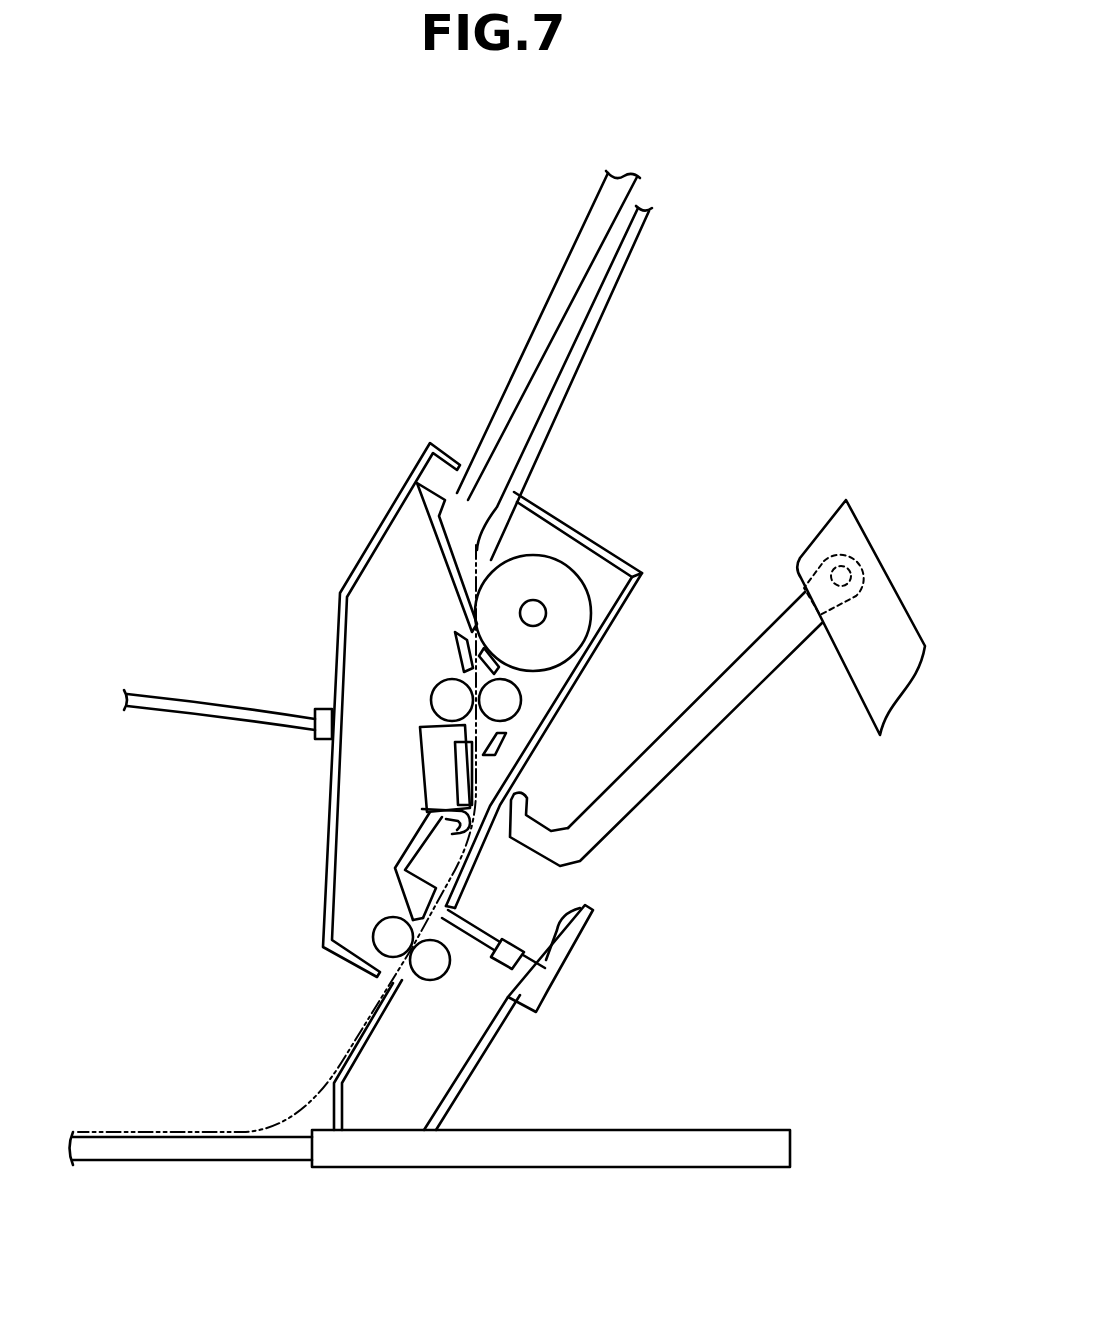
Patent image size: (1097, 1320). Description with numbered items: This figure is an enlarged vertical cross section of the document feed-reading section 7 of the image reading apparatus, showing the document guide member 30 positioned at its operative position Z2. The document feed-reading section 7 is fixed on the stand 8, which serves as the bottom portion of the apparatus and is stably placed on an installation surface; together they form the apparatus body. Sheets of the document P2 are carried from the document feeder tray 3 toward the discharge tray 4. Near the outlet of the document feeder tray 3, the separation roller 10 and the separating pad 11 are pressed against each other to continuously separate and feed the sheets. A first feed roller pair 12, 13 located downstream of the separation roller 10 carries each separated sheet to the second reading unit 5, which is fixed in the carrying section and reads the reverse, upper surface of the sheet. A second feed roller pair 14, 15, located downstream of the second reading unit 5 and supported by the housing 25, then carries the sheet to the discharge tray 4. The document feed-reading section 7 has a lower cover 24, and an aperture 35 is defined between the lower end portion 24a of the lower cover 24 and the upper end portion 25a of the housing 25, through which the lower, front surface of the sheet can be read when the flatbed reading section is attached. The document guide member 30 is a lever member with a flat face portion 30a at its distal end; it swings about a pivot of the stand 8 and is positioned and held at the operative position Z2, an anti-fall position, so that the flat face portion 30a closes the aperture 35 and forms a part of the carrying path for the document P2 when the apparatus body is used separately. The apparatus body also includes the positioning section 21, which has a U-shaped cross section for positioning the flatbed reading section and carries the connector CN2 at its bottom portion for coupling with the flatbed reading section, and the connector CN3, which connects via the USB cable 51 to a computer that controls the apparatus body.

The document feeder tray 3 is at (592, 333).
The discharge tray 4 is at (163, 1150).
The second reading unit 5 is at (443, 760).
The document feed-reading section 7 is at (330, 673).
The stand 8 is at (735, 1142).
The separation roller 10 is at (568, 612).
The separating pad 11 is at (458, 603).
The first feed roller pair 12 is at (500, 700).
The first feed roller pair 13 is at (450, 698).
The second feed roller pair 14 is at (433, 967).
The second feed roller pair 15 is at (390, 937).
The positioning section 21 is at (490, 930).
The lower cover 24 is at (580, 537).
The lower end portion 24a is at (497, 830).
The housing 25 is at (470, 1063).
The upper end portion 25a is at (450, 907).
The document guide member 30 is at (668, 748).
The flat face portion 30a is at (455, 870).
The aperture 35 is at (443, 816).
The USB cable 51 is at (173, 710).
The connector CN2 is at (502, 968).
The connector CN3 is at (312, 713).
The document P2 is at (576, 255).
The operative position Z2 is at (565, 838).